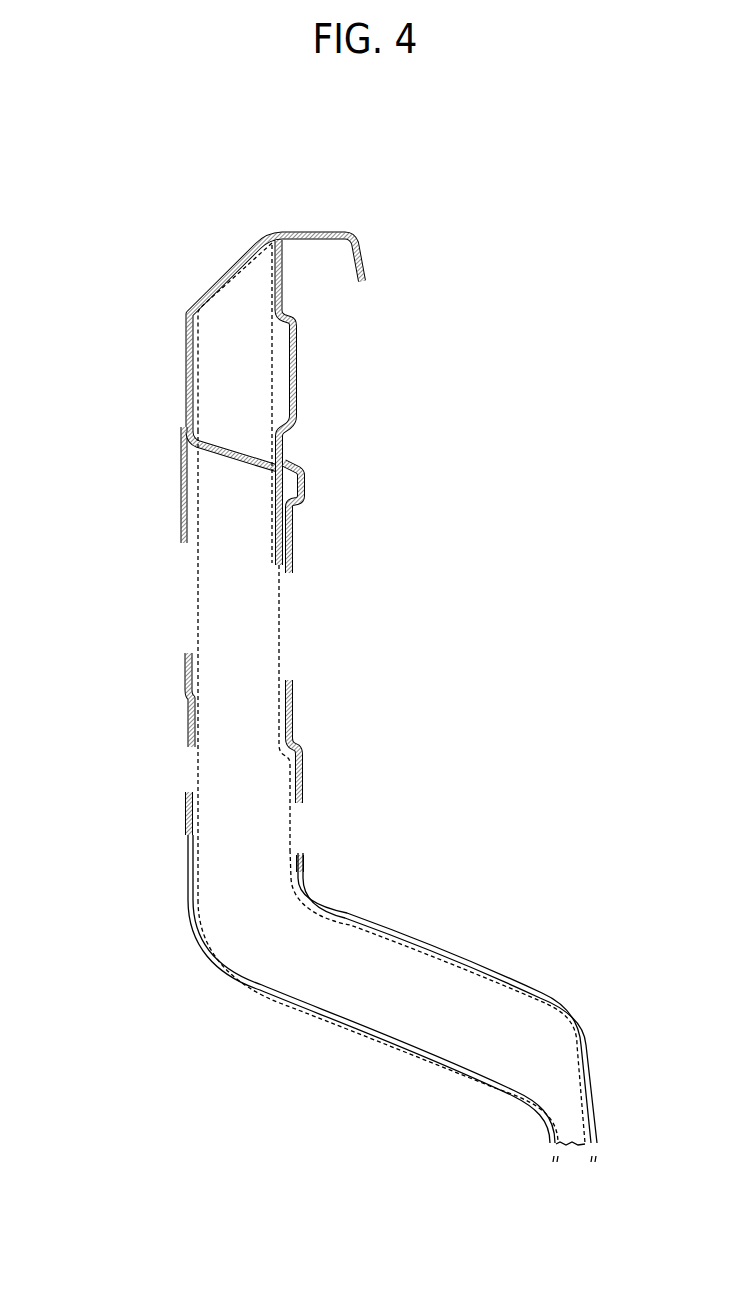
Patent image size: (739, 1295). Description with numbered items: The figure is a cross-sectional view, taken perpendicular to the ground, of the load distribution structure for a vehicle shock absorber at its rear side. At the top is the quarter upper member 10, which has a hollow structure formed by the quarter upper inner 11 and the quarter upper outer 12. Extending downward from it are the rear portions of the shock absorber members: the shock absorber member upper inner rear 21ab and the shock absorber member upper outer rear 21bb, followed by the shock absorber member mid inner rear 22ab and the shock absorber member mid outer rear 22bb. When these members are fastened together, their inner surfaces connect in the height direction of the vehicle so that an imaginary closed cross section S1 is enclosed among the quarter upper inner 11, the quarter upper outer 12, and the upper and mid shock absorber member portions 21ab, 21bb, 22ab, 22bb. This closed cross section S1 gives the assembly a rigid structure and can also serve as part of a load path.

The quarter upper member 10 is at (329, 171).
The quarter upper inner 11 is at (283, 279).
The quarter upper outer 12 is at (217, 277).
The shock absorber member upper inner rear 21ab is at (293, 527).
The shock absorber member upper outer rear 21bb is at (185, 667).
The shock absorber member mid inner rear 22ab is at (418, 940).
The shock absorber member mid outer rear 22bb is at (272, 1000).
The closed cross section S1 is at (279, 655).